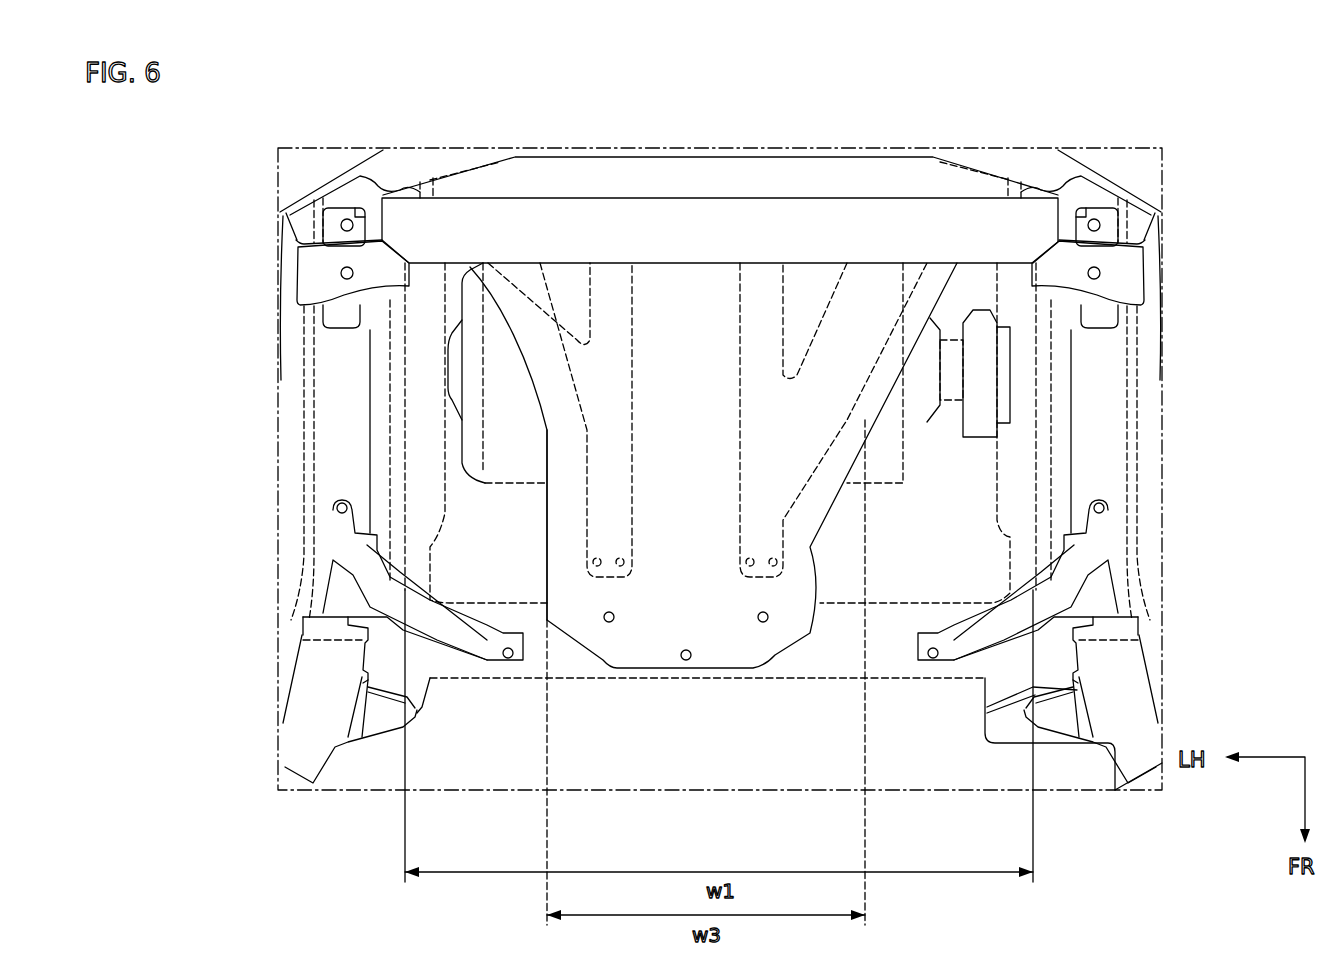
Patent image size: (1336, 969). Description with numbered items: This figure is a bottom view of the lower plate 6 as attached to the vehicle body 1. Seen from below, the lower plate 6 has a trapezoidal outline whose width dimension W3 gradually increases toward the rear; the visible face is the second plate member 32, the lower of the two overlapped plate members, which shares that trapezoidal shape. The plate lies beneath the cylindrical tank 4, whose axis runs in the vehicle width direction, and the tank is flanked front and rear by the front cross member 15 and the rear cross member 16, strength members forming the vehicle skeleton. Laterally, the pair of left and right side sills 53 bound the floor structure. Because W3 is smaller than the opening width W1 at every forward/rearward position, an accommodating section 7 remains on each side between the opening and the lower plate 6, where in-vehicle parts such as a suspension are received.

The vehicle 1 is at (278, 148).
The rear cross member 16 is at (692, 228).
The front cross member 15 is at (853, 655).
The second plate member 32 is at (683, 587).
The lower plate 6 is at (546, 571).
The tank 4 is at (443, 345).
The accommodating section 7 is at (460, 481).
The side sill 53 is at (317, 517).